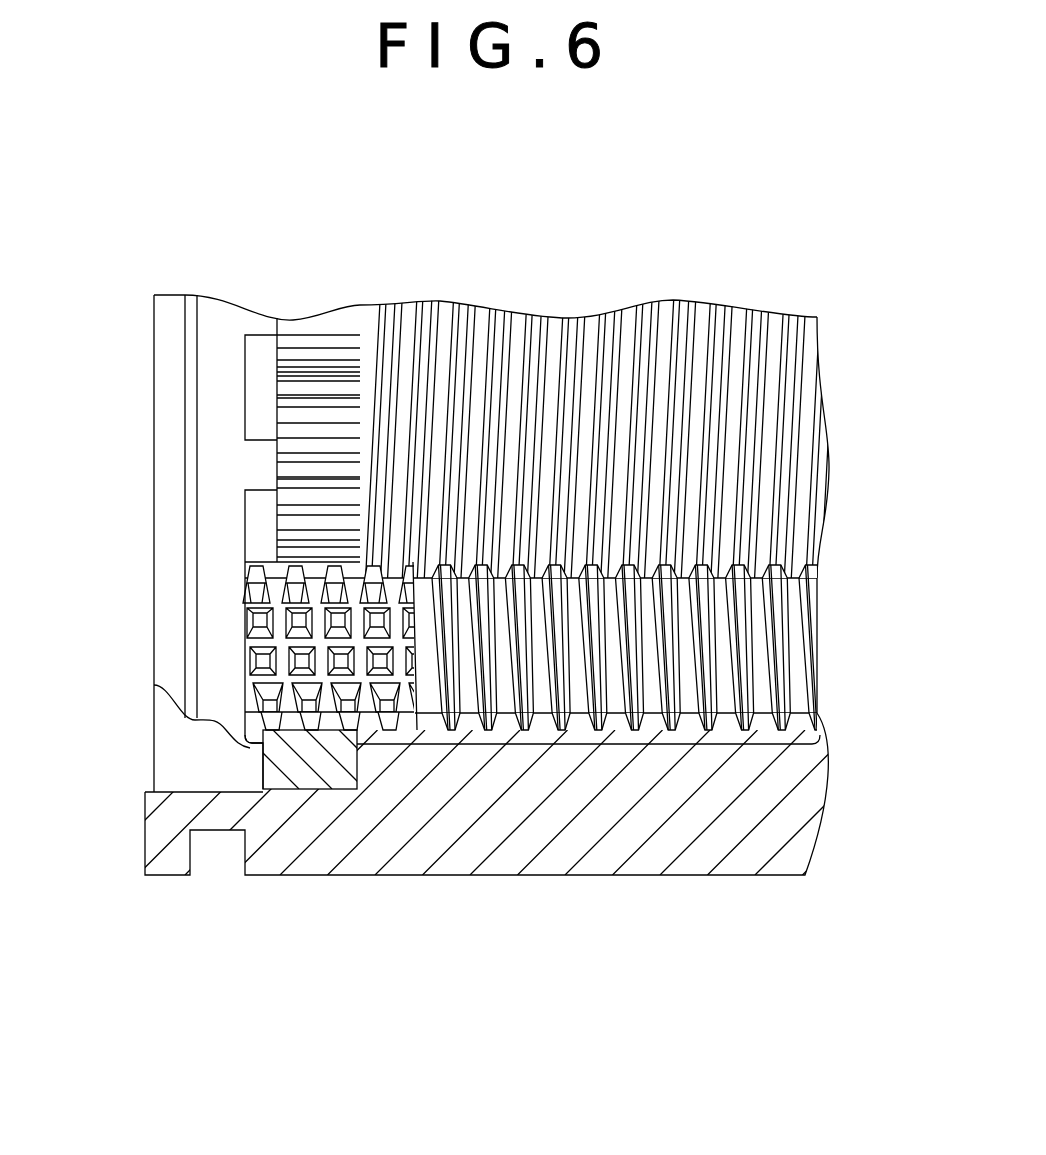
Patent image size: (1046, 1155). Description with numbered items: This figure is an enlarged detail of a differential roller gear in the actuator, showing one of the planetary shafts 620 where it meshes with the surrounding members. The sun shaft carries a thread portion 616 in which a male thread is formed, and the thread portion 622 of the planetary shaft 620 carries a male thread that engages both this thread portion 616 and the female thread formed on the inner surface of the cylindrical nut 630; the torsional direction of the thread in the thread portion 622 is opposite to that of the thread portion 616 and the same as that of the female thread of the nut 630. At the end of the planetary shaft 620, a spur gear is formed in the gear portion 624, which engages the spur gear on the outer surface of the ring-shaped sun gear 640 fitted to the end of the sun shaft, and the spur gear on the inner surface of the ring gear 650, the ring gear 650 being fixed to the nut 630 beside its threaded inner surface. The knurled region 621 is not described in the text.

The thread portion 616 is at (817, 297).
The planetary shaft 620 is at (753, 643).
The knurled portion 621 is at (250, 621).
The thread portion 622 is at (613, 748).
The gear portion 624 is at (322, 753).
The nut 630 is at (528, 835).
The sun gear 640 is at (297, 452).
The ring gear 650 is at (293, 772).